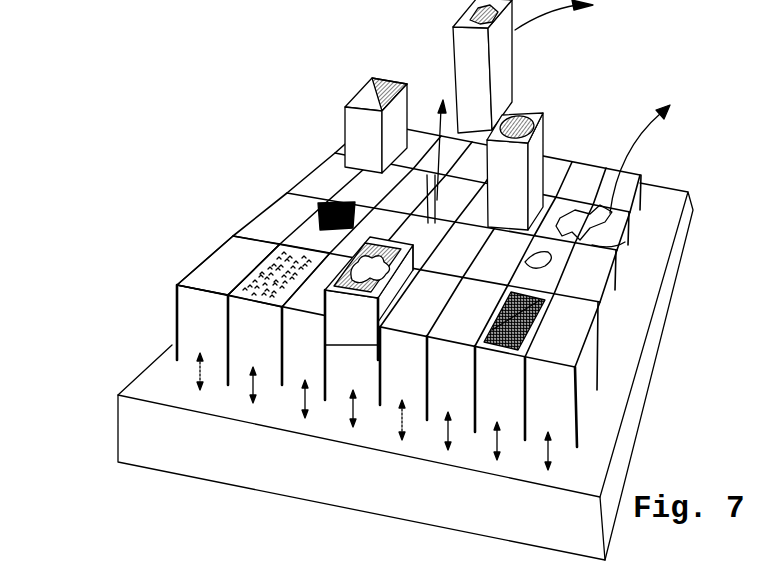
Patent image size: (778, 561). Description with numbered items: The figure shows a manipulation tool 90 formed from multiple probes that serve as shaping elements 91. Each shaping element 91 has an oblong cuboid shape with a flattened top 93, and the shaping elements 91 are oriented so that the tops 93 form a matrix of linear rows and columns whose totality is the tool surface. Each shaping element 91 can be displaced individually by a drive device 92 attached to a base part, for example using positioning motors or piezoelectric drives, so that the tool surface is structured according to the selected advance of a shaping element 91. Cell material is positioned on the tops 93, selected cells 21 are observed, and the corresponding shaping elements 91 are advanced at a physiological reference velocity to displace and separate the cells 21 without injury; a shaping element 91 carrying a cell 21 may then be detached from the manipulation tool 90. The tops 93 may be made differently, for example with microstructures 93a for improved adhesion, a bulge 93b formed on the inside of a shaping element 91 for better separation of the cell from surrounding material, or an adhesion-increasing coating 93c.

The manipulation tool 90 is at (197, 168).
The shaping element 91 is at (190, 308).
The drive device 92 is at (153, 427).
The top 93 is at (223, 258).
The microstructures 93a is at (268, 294).
The bulge 93b is at (533, 112).
The adhesion-increasing coating 93c is at (553, 310).
The cell 21 is at (350, 293).